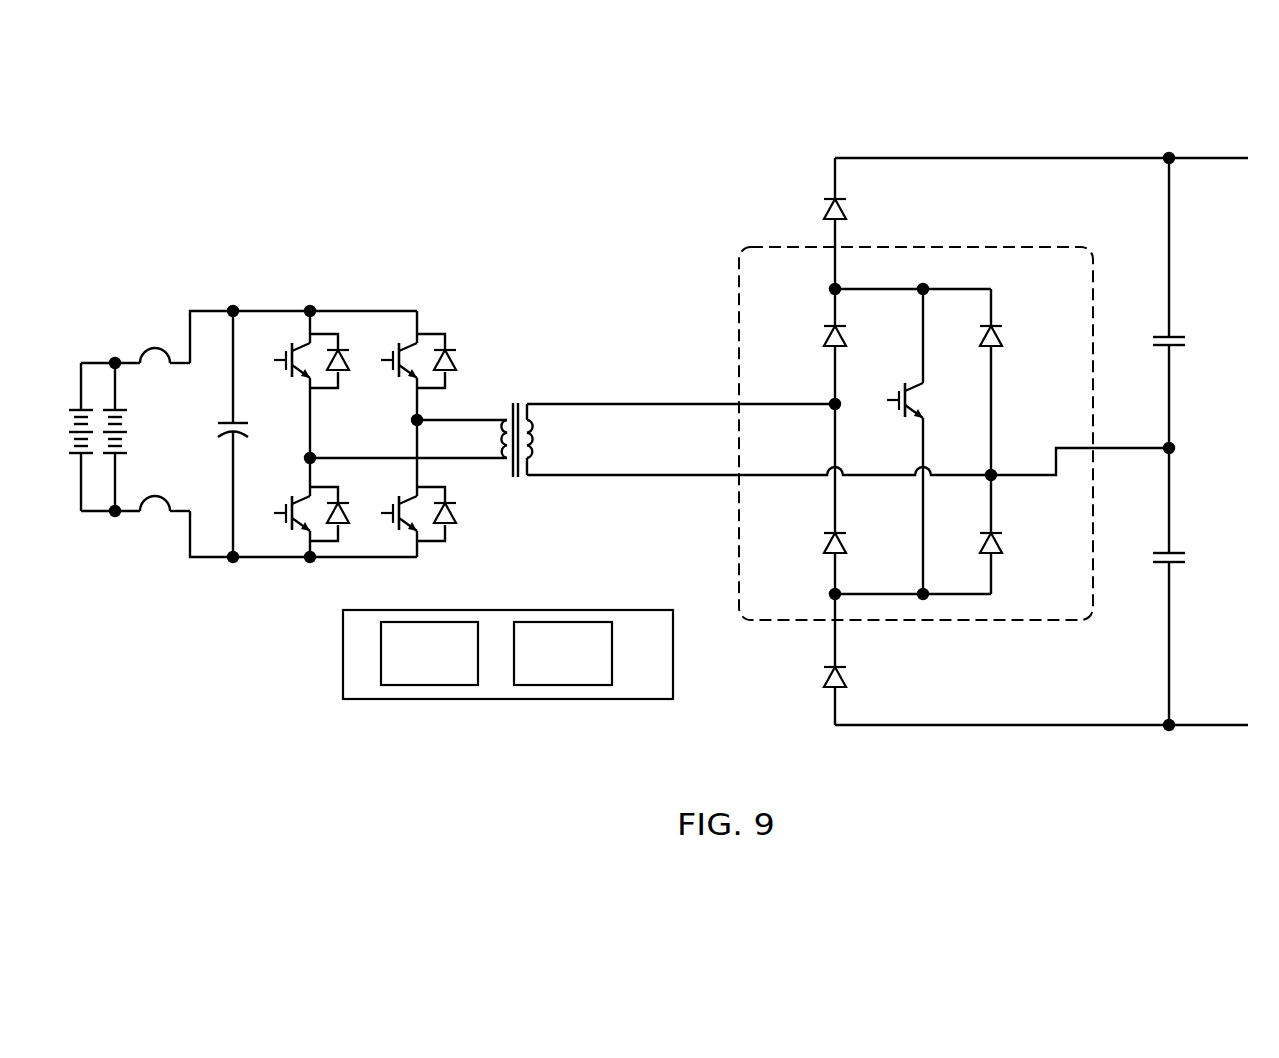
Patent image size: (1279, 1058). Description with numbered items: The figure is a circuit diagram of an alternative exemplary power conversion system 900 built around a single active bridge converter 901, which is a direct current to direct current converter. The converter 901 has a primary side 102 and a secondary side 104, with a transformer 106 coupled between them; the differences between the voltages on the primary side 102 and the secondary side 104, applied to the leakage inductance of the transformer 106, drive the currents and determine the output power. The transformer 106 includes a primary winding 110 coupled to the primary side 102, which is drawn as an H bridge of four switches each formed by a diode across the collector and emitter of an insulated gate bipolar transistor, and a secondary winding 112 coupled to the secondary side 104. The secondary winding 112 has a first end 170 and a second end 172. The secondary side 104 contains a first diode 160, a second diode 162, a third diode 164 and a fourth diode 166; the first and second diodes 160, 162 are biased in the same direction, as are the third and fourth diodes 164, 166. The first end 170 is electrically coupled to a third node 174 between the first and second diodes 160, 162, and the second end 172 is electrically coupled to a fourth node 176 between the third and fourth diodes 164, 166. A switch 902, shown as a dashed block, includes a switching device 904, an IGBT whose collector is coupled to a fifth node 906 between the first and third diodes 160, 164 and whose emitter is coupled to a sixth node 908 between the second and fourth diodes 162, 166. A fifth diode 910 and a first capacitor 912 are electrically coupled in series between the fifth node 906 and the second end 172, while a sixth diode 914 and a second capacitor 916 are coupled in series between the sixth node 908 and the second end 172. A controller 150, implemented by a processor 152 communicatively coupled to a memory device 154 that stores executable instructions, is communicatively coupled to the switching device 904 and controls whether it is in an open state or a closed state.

The power conversion system 900 is at (650, 108).
The single active bridge converter 901 is at (606, 255).
The primary side 102 is at (203, 310).
The secondary side 104 is at (1042, 157).
The transformer 106 is at (515, 400).
The primary winding 110 is at (498, 446).
The secondary winding 112 is at (534, 440).
The controller 150 is at (510, 609).
The processor 152 is at (408, 666).
The memory device 154 is at (542, 666).
The first diode 160 is at (825, 333).
The second diode 162 is at (845, 545).
The third diode 164 is at (1000, 333).
The fourth diode 166 is at (1000, 545).
The first end 170 is at (570, 402).
The second end 172 is at (660, 474).
The third node 174 is at (840, 400).
The fourth node 176 is at (993, 470).
The switch 902 is at (940, 246).
The switching device 904 is at (915, 396).
The fifth node 906 is at (925, 288).
The sixth node 908 is at (925, 577).
The fifth diode 910 is at (825, 205).
The first capacitor 912 is at (1188, 339).
The sixth diode 914 is at (848, 680).
The second capacitor 916 is at (1188, 556).